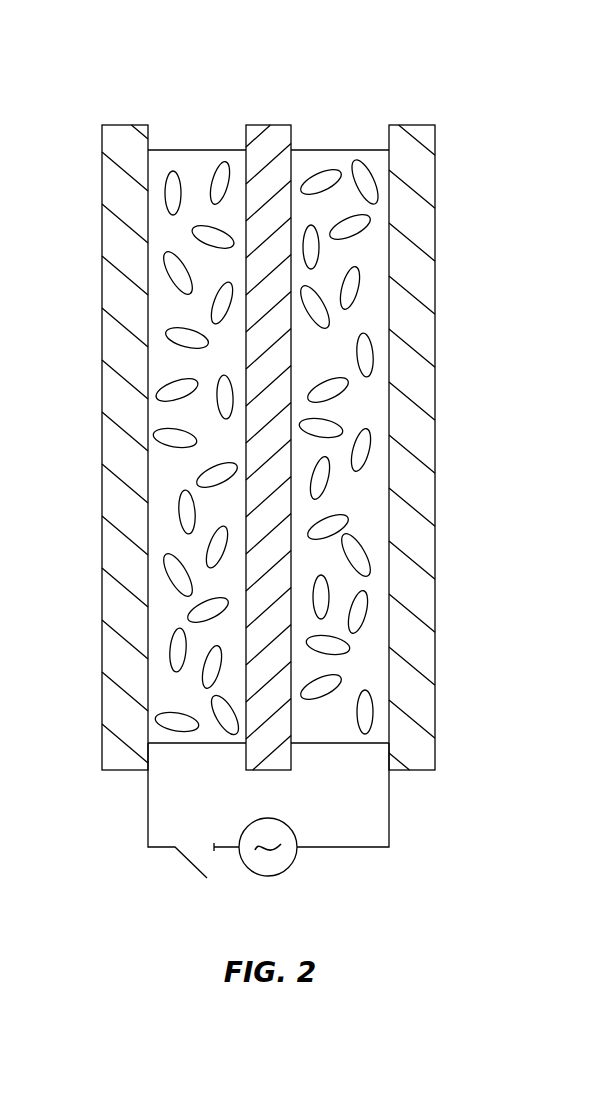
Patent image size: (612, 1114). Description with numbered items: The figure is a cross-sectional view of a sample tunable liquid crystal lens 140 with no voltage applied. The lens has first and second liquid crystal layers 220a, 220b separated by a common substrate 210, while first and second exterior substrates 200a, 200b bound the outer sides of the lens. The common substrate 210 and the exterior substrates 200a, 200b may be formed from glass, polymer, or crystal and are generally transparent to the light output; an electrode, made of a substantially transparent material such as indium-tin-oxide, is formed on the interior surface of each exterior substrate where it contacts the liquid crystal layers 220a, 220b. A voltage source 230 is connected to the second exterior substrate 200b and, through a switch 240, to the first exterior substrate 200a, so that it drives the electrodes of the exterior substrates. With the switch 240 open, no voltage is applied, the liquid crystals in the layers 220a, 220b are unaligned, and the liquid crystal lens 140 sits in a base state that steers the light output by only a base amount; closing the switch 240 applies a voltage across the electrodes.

The tunable liquid crystal lens 140 is at (79, 58).
The first exterior substrate 200a is at (102, 388).
The second exterior substrate 200b is at (435, 388).
The common substrate 210 is at (262, 125).
The first liquid crystal layer 220a is at (196, 150).
The second liquid crystal layer 220b is at (336, 150).
The voltage source 230 is at (284, 877).
The switch 240 is at (182, 864).